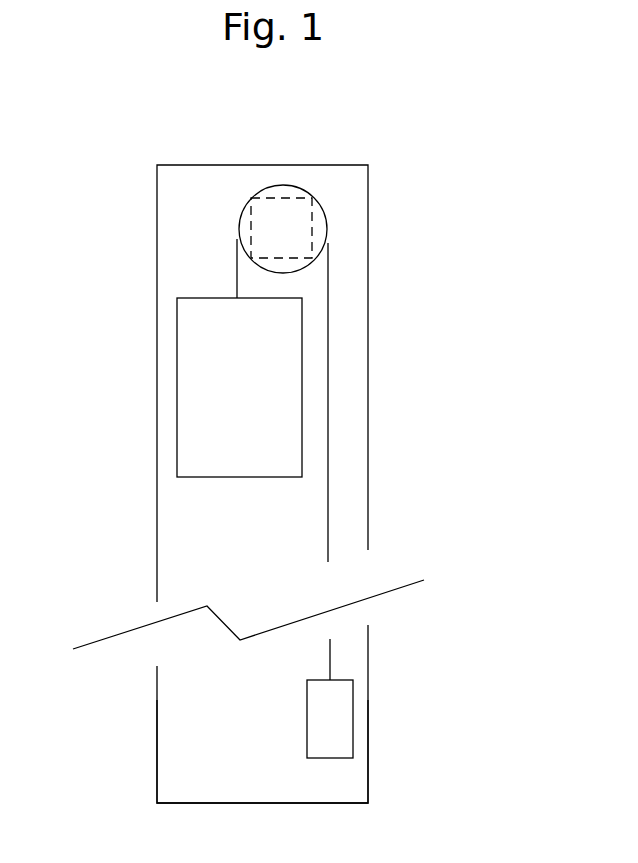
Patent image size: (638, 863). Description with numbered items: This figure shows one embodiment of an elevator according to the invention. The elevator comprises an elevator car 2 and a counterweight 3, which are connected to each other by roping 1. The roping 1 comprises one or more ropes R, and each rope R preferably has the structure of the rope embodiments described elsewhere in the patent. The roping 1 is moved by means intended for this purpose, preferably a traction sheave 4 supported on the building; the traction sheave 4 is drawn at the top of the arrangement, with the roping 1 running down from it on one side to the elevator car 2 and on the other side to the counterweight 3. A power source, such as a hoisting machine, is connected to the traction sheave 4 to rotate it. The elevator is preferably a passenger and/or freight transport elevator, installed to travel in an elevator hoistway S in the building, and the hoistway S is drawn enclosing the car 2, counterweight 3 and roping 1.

The roping 1 is at (281, 484).
The rope R is at (328, 432).
The elevator car 2 is at (202, 382).
The counterweight 3 is at (332, 730).
The traction sheave 4 is at (318, 218).
The elevator hoistway S is at (190, 693).